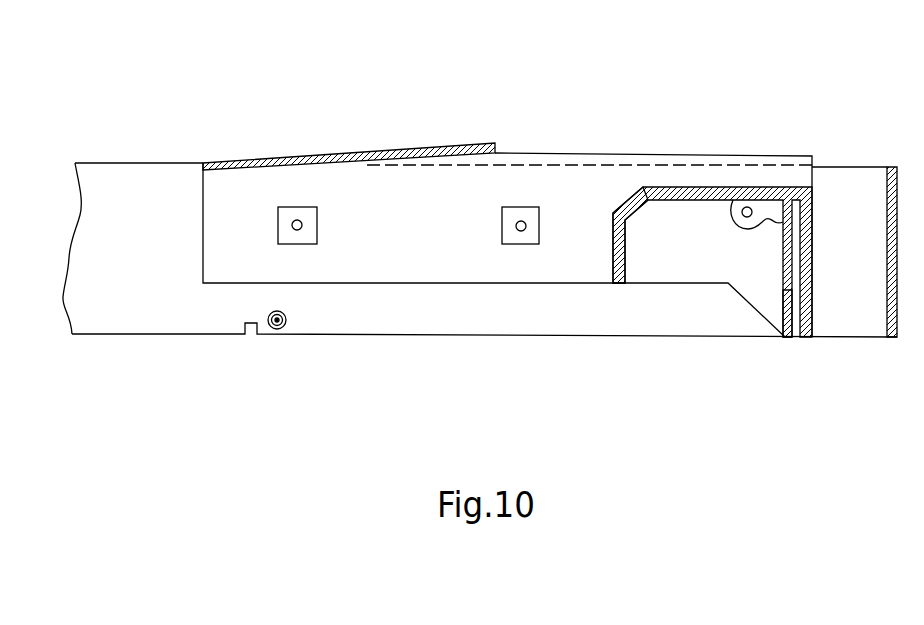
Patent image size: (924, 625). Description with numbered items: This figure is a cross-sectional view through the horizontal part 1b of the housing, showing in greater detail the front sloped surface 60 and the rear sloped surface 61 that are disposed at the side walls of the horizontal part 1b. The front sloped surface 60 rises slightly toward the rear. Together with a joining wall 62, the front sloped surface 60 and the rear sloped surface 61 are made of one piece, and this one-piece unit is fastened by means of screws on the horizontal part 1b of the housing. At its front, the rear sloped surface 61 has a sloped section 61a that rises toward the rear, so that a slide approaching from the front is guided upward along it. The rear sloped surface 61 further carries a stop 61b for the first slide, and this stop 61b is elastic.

The horizontal part of the housing 1b is at (139, 250).
The front sloped surface 60 is at (345, 152).
The rear sloped surface 61 is at (710, 196).
The sloped section 61a is at (627, 205).
The stop 61b is at (788, 330).
The joining wall 62 is at (428, 242).